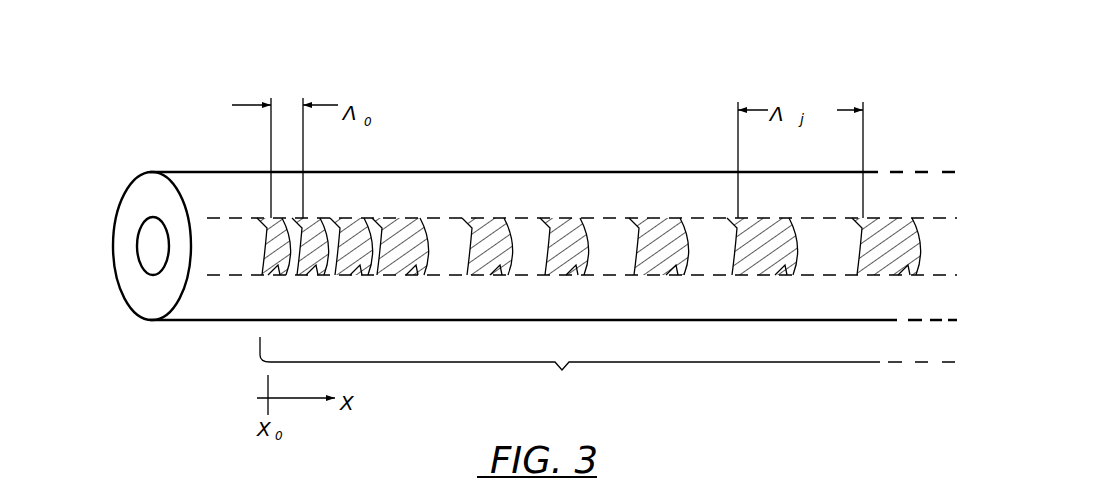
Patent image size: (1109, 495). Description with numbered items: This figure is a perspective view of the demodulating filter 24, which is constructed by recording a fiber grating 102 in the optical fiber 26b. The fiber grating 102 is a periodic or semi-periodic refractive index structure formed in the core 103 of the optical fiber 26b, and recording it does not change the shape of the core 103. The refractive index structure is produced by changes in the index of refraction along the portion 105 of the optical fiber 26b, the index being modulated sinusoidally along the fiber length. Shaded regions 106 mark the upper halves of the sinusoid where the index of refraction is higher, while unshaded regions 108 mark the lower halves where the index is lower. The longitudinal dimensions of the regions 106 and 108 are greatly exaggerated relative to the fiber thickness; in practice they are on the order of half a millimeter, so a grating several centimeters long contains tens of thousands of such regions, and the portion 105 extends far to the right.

The filter 24 is at (487, 128).
The optical fiber 26b is at (178, 172).
The core 103 is at (150, 242).
The fiber grating 102 is at (589, 223).
The shaded regions 106 is at (400, 217).
The unshaded regions 108 is at (447, 273).
The portion of the optical fiber 105 is at (607, 370).